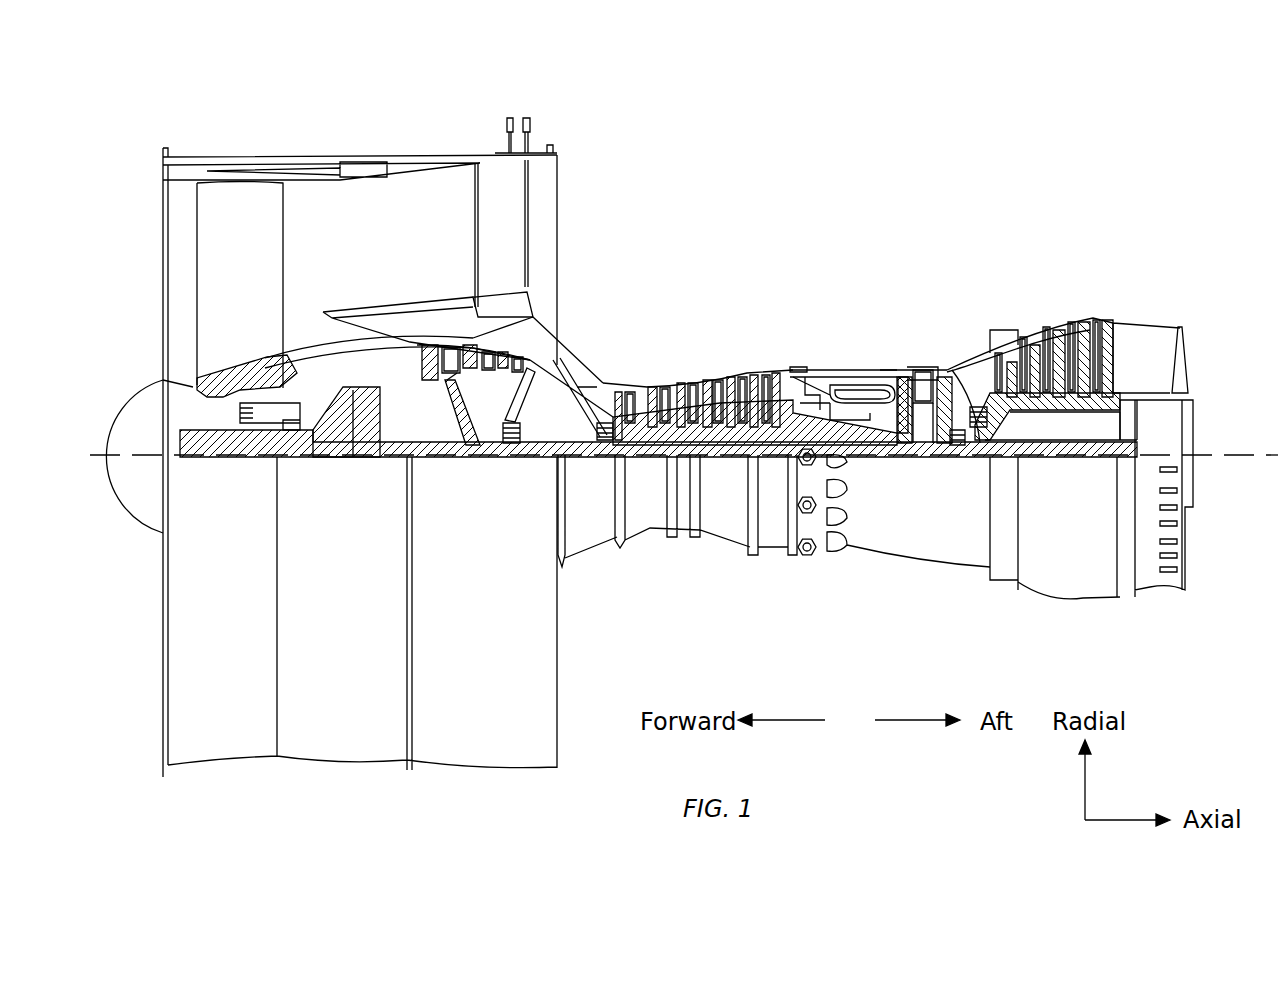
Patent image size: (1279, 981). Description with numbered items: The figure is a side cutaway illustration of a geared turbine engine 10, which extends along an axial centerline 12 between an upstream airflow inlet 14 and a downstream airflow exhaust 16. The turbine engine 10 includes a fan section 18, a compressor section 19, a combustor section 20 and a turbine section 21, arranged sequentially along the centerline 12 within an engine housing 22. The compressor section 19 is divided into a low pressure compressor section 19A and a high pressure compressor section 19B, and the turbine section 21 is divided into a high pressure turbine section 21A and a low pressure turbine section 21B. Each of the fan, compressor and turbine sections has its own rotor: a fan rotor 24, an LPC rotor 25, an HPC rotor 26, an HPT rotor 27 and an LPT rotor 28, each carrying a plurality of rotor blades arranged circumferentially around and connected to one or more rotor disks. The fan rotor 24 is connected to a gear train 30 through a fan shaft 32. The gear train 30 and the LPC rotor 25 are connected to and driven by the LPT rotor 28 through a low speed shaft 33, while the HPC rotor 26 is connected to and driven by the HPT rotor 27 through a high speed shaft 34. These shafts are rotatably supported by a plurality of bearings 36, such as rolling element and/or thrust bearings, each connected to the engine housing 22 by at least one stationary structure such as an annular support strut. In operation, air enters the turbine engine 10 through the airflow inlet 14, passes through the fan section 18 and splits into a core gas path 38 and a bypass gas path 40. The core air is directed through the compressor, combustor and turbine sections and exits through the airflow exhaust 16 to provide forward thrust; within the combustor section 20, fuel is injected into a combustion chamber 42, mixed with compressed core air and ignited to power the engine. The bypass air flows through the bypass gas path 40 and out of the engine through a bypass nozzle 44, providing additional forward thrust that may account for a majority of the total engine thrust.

The geared turbine engine 10 is at (674, 399).
The axial centerline 12 is at (1242, 465).
The upstream airflow inlet 14 is at (163, 233).
The downstream airflow exhaust 16 is at (1187, 357).
The fan section 18 is at (327, 133).
The compressor section 19 is at (770, 75).
The low pressure compressor (LPC) section 19A is at (558, 120).
The high pressure compressor (HPC) section 19B is at (770, 302).
The combustor section 20 is at (849, 341).
The turbine section 21 is at (1145, 235).
The high pressure turbine (HPT) section 21A is at (930, 382).
The low pressure turbine (LPT) section 21B is at (1063, 420).
The engine housing 22 is at (575, 562).
The fan rotor 24 is at (190, 385).
The LPC rotor 25 is at (457, 417).
The HPC rotor 26 is at (727, 435).
The HPT rotor 27 is at (920, 430).
The LPT rotor 28 is at (1060, 410).
The gear train 30 is at (363, 458).
The fan shaft 32 is at (230, 450).
The low speed shaft 33 is at (773, 457).
The high speed shaft 34 is at (860, 442).
The bearings 36 is at (263, 427).
The core gas path 38 is at (577, 387).
The bypass gas path 40 is at (412, 242).
The combustion chamber 42 is at (850, 393).
The bypass nozzle 44 is at (557, 210).